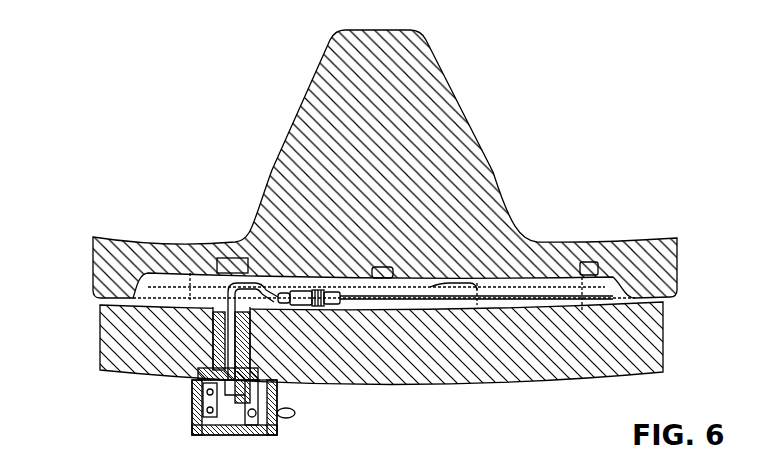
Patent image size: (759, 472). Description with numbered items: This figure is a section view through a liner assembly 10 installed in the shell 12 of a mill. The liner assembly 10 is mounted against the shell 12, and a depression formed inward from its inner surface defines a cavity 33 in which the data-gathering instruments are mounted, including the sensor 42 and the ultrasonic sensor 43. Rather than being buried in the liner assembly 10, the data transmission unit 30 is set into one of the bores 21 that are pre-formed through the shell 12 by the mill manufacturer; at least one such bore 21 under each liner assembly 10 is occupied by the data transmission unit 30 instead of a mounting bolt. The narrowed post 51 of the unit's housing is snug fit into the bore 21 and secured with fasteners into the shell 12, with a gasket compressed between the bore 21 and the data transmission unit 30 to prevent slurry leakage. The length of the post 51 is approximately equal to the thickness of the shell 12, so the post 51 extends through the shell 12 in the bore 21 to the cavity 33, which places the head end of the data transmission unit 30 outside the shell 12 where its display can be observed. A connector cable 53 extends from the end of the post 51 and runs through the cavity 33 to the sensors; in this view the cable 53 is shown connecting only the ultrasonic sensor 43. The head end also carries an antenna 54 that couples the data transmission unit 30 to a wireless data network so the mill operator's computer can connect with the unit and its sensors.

The liner assembly 10 is at (449, 76).
The shell 12 is at (453, 370).
The bore 21 is at (247, 345).
The data transmission unit 30 is at (190, 430).
The cavity 33 is at (584, 310).
The sensor 42 is at (590, 262).
The ultrasonic sensor 43 is at (385, 262).
The post 51 is at (213, 340).
The connector cable 53 is at (257, 278).
The antenna 54 is at (296, 413).